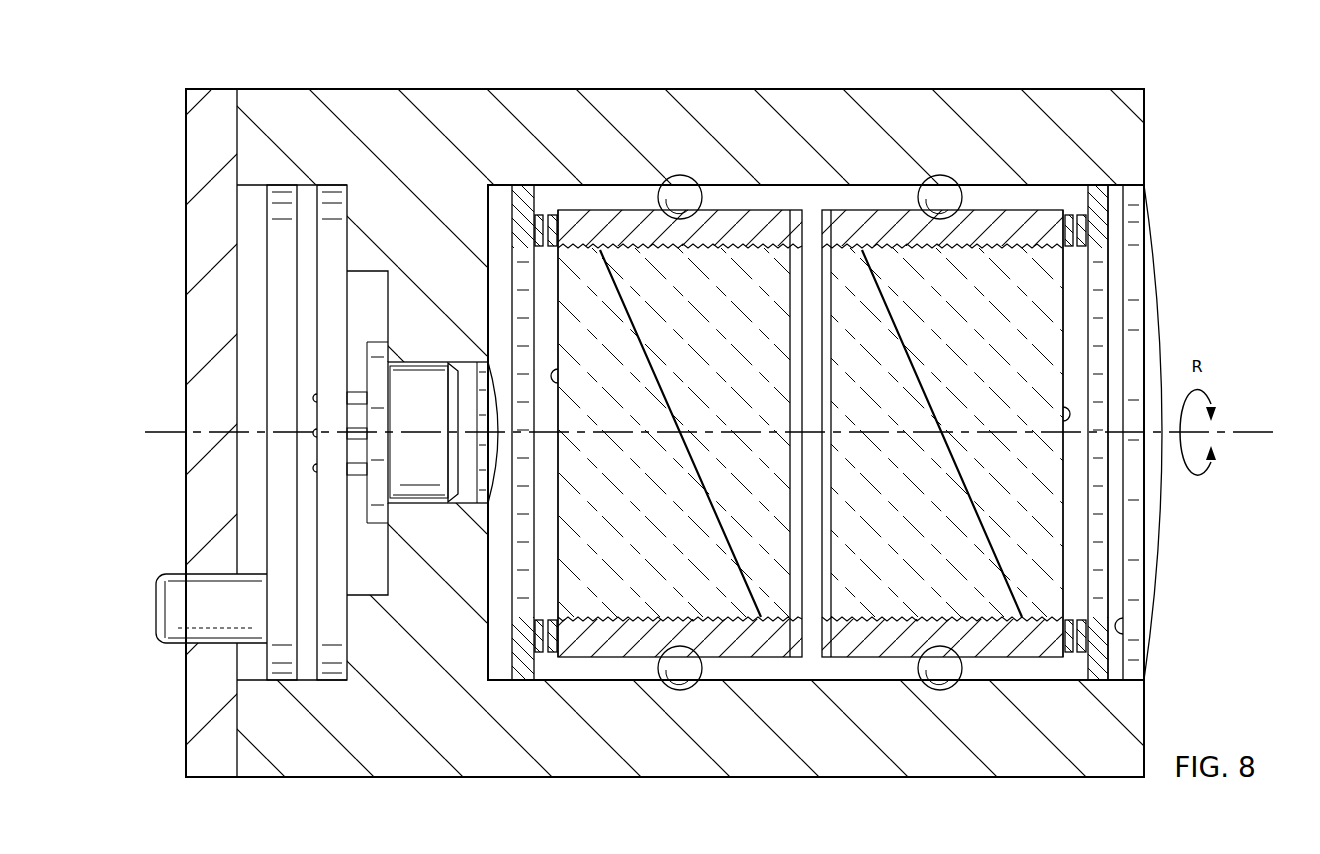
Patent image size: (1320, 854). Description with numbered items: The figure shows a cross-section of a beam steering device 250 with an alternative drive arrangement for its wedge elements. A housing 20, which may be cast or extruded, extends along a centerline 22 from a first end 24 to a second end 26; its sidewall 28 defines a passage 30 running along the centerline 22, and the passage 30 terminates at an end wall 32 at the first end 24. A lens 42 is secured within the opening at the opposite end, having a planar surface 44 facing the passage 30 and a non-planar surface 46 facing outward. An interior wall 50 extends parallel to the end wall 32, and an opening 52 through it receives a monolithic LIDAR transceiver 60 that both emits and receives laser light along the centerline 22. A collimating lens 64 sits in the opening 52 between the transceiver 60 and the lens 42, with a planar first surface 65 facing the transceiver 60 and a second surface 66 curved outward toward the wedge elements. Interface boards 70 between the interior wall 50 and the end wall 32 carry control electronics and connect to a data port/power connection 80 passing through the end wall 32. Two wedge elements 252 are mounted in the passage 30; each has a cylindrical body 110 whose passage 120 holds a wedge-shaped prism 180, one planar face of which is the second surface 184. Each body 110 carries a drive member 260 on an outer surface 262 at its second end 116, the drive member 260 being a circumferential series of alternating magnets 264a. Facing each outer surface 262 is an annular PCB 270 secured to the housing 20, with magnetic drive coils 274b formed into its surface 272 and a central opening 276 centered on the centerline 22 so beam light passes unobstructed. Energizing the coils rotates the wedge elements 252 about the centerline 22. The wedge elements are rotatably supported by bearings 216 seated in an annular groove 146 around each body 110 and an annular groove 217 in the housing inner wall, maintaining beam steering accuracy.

The housing 20 is at (435, 78).
The centerline 22 is at (723, 456).
The first end 24 is at (192, 790).
The second end 26 is at (1137, 790).
The sidewall 28 is at (583, 778).
The passage 30 is at (1050, 662).
The end wall 32 is at (200, 98).
The lens 42 is at (1160, 300).
The planar surface 44 is at (1128, 628).
The non-planar surface 46 is at (1115, 572).
The interior wall 50 is at (383, 722).
The opening 52 is at (467, 380).
The monolithic LIDAR transceiver 60 is at (406, 442).
The collimating lens 64 is at (497, 425).
The planar first surface 65 is at (477, 480).
The second surface 66 is at (497, 445).
The interface boards 70 is at (325, 300).
The data port/power connection 80 is at (178, 646).
The cylindrical body 110 is at (700, 616).
The second end 116 is at (565, 660).
The passage 120 is at (811, 433).
The annular groove 146 is at (660, 250).
The wedge-shaped prism 180 is at (706, 395).
The second surface 184 is at (697, 475).
The bearings 216 is at (672, 177).
The annular groove 217 is at (673, 690).
The beam steering device 250 is at (1035, 65).
The wedge elements 252 is at (780, 209).
The drive member 260 is at (555, 568).
The outer surface 262 is at (560, 372).
The magnets 264a is at (555, 218).
The PCB 270 is at (540, 530).
The surface 272 is at (560, 345).
The magnetic drive coils 274b is at (537, 220).
The central opening 276 is at (522, 296).